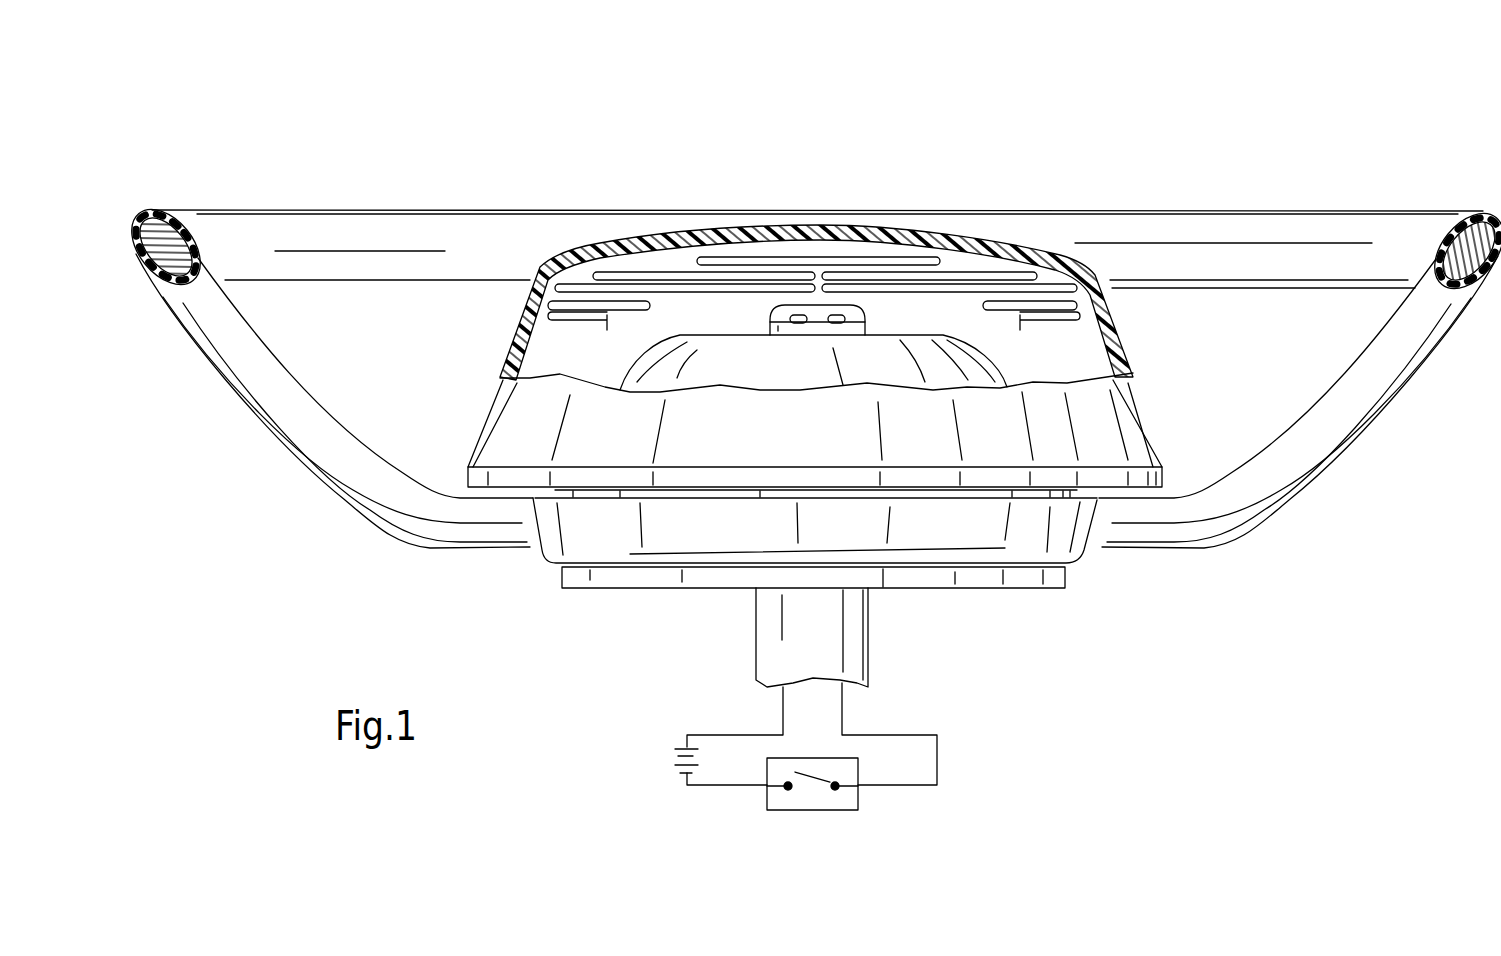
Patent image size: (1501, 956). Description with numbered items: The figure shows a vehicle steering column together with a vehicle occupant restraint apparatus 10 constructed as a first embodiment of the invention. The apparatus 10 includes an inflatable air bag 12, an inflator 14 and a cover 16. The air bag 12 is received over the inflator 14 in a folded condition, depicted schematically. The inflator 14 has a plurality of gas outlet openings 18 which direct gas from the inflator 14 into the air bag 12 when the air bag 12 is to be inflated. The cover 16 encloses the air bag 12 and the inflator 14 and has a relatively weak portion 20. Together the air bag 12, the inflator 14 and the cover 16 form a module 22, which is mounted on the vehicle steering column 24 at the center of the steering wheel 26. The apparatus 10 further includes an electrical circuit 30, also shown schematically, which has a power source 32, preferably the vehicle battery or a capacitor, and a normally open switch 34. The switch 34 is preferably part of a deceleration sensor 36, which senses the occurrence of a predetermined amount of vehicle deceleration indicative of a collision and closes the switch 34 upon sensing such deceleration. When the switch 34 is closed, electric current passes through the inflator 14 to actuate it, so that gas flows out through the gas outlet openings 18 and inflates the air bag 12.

The vehicle occupant restraint apparatus 10 is at (560, 148).
The inflatable air bag 12 is at (973, 272).
The inflator 14 is at (1003, 356).
The cover 16 is at (679, 243).
The gas outlet openings 18 is at (803, 317).
The relatively weak portion 20 is at (817, 228).
The module 22 is at (455, 352).
The vehicle steering column 24 is at (753, 623).
The steering wheel 26 is at (393, 235).
The electrical circuit 30 is at (919, 716).
The power source 32 is at (681, 748).
The normally open switch 34 is at (817, 775).
The deceleration sensor 36 is at (858, 798).